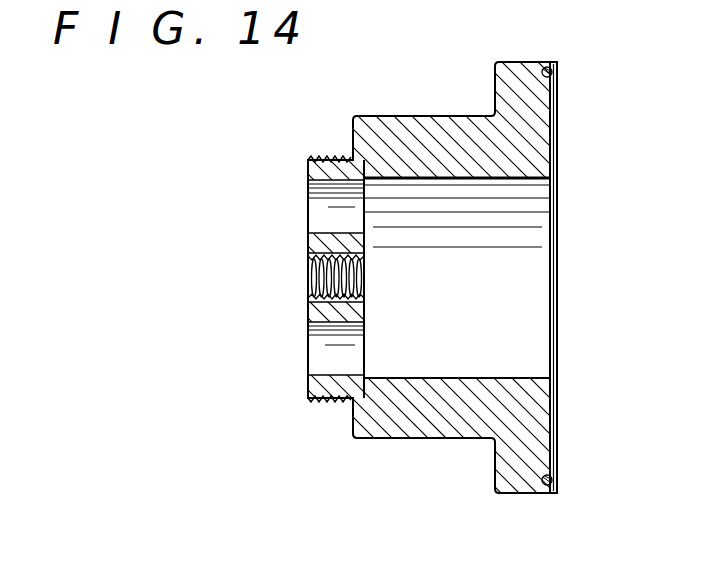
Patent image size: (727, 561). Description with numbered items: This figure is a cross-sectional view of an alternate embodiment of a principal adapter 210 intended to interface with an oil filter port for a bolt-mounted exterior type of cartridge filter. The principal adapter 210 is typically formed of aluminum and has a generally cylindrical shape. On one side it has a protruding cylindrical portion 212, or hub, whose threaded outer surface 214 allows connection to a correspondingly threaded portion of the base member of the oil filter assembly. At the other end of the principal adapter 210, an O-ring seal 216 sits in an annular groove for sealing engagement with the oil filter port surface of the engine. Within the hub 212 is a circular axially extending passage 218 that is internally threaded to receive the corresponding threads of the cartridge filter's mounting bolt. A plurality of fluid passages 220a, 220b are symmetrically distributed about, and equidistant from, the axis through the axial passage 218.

The principal adapter 210 is at (428, 115).
The protruding cylindrical portion 212 is at (308, 162).
The threaded outer surface 214 is at (318, 153).
The O-ring seal 216 is at (558, 73).
The circular axially extending passage 218 is at (308, 272).
The fluid passage 220a is at (343, 183).
The fluid passage 220b is at (318, 373).